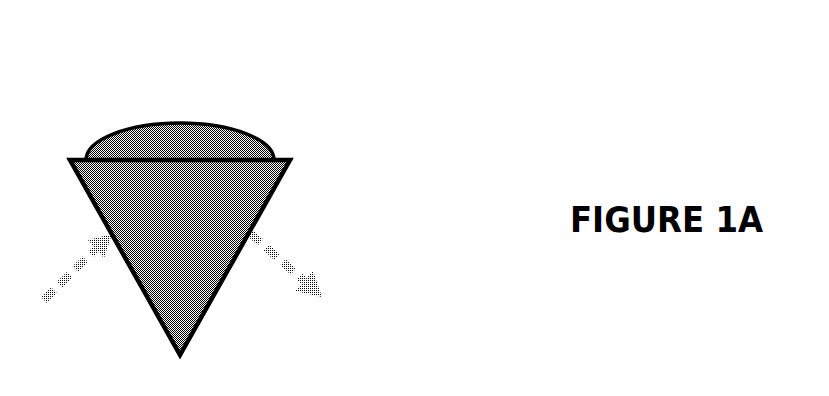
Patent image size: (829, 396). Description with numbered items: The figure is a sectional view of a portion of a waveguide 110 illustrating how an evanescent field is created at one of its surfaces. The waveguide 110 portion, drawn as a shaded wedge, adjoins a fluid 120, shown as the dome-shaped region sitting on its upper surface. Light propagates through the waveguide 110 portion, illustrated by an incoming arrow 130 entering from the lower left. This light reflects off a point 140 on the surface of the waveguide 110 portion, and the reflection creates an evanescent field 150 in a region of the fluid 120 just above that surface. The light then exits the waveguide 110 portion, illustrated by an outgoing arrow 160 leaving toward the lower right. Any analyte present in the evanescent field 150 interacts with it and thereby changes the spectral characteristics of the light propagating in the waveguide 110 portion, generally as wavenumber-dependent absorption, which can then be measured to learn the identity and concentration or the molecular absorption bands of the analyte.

The waveguide 110 is at (197, 260).
The fluid 120 is at (258, 140).
The incoming arrow 130 is at (74, 272).
The point 140 is at (175, 159).
The evanescent field 150 is at (187, 136).
The outgoing arrow 160 is at (292, 260).